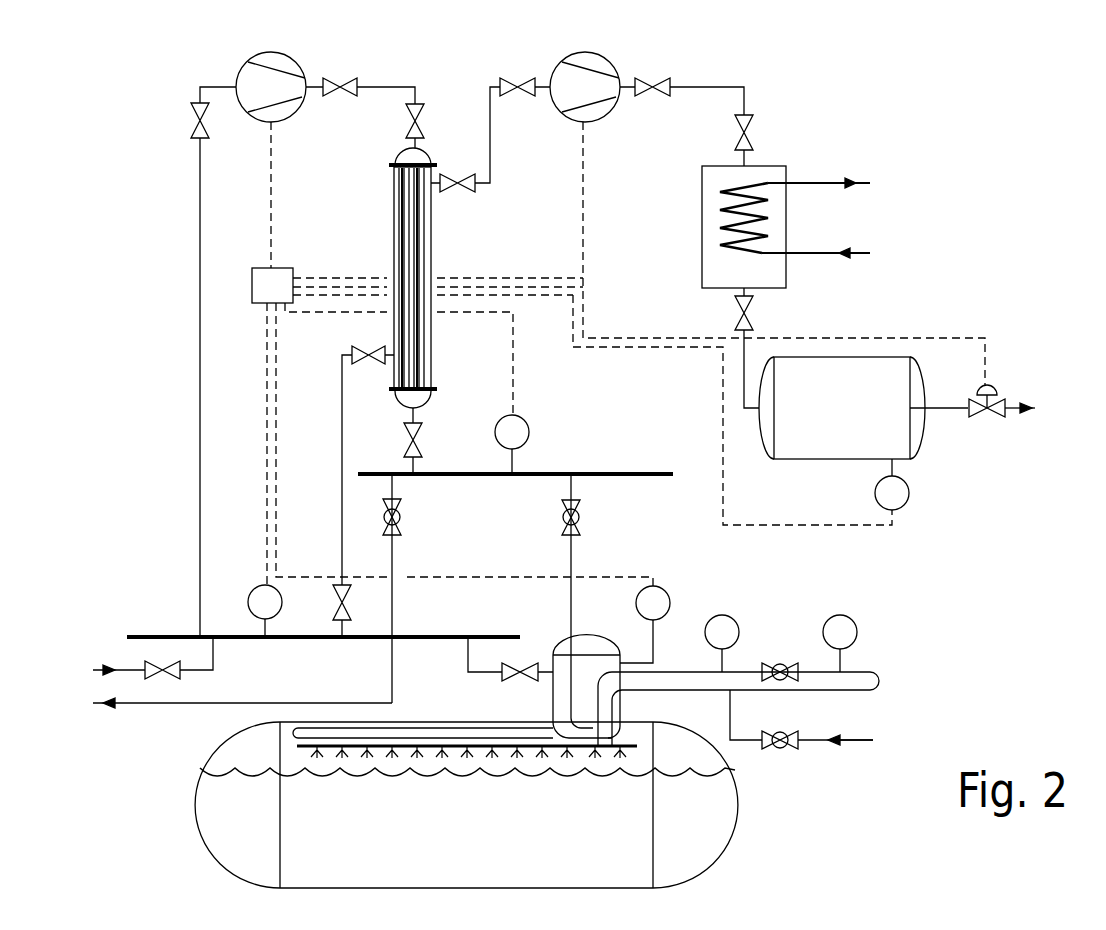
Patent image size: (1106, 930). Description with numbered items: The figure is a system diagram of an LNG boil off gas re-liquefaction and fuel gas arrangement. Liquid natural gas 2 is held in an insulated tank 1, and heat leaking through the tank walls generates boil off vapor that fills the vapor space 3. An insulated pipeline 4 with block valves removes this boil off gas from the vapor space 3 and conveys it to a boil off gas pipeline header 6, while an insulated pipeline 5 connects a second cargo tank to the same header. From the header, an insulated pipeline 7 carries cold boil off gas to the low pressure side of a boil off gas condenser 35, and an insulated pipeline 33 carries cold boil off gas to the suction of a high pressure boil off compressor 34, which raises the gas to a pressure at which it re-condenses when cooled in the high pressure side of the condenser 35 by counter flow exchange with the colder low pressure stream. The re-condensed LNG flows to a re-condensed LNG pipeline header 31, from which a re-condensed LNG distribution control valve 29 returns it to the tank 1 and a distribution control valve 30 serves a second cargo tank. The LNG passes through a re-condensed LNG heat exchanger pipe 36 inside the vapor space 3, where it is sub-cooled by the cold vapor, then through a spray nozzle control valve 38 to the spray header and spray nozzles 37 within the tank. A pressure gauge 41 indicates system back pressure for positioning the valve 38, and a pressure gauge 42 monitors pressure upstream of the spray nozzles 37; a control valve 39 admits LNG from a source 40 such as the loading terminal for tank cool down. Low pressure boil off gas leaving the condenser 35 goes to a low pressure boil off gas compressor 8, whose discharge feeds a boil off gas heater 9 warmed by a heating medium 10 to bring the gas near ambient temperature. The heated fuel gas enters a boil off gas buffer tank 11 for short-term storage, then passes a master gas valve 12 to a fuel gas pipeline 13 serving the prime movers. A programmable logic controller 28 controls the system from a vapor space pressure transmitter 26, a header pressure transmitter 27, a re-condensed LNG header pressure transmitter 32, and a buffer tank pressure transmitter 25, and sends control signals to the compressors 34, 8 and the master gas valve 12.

The insulated tank 1 is at (195, 790).
The liquid natural gas 2 is at (225, 820).
The vapor space 3 is at (240, 745).
The insulated pipeline 4 is at (483, 675).
The insulated pipeline 5 is at (212, 671).
The boil off gas pipeline header 6 is at (410, 635).
The insulated pipeline 7 is at (340, 408).
The low pressure boil off gas compressor 8 is at (557, 110).
The boil off gas heater 9 is at (700, 215).
The heating medium 10 is at (855, 248).
The boil off gas buffer tank 11 is at (835, 352).
The master gas valve 12 is at (987, 412).
The fuel gas pipeline 13 is at (1024, 400).
The fuel gas buffer tank pressure transmitter 25 is at (913, 487).
The LNG cargo tank vapor space pressure transmitter 26 is at (670, 590).
The boil off gas pipeline header pressure transmitter 27 is at (250, 590).
The programmable logic controller 28 is at (286, 266).
The re-condensed LNG distribution control valve 29 is at (579, 515).
The distribution control valve 30 is at (410, 512).
The re-condensed LNG pipeline header 31 is at (598, 472).
The re-condensed LNG pipeline header pressure transmitter 32 is at (527, 418).
The insulated pipeline 33 is at (198, 258).
The high pressure boil off compressor 34 is at (295, 122).
The boil off gas condenser 35 is at (435, 236).
The re-condensed LNG heat exchanger pipe 36 is at (398, 728).
The spray nozzles 37 is at (563, 752).
The spray nozzle control valve 38 is at (783, 660).
The control valve 39 is at (783, 750).
The LNG source 40 is at (858, 743).
The pressure gauge 41 is at (736, 618).
The pressure gauge 42 is at (858, 618).